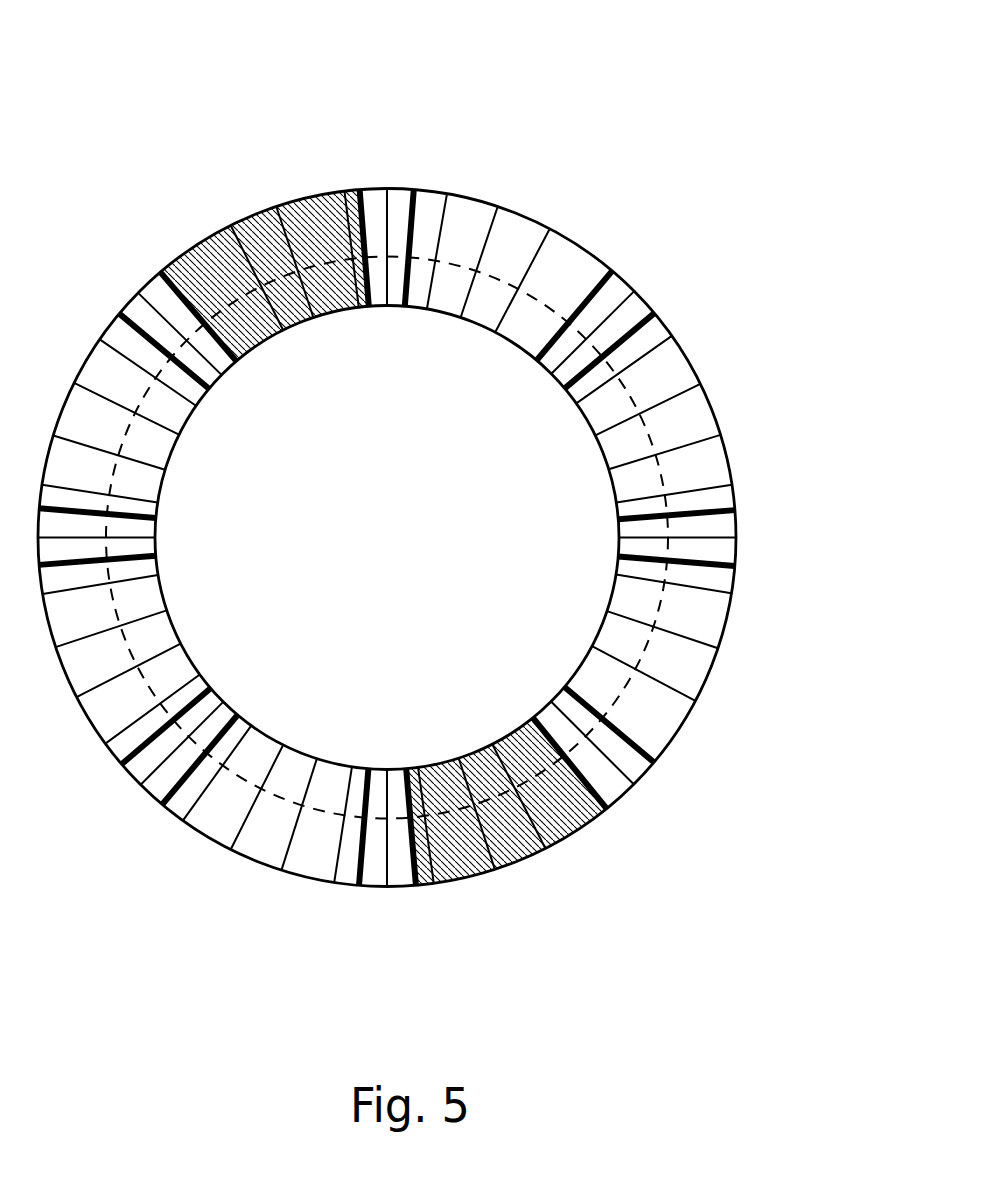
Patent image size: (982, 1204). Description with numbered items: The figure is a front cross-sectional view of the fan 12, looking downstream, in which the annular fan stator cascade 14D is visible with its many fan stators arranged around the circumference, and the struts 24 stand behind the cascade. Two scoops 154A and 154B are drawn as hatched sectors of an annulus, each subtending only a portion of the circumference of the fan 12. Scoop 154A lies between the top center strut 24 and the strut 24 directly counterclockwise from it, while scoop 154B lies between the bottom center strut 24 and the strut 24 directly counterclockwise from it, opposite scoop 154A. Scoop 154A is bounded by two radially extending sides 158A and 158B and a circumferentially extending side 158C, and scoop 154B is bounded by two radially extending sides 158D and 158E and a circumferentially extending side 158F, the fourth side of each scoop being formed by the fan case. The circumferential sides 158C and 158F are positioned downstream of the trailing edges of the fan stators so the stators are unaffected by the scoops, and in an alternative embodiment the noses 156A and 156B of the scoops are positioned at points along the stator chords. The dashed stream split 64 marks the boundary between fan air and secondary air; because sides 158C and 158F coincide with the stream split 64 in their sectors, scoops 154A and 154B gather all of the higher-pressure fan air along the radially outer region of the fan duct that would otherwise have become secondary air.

The fan 12 is at (721, 86).
The fan stator cascade 14D is at (498, 216).
The strut 24 is at (419, 222).
The stream split 64 is at (669, 514).
The scoop 154A is at (318, 258).
The scoop 154B is at (499, 806).
The nose 156A is at (226, 304).
The nose 156B is at (527, 808).
The radially extending side 158A is at (176, 285).
The radially extending side 158B is at (356, 208).
The circumferentially extending side 158C is at (275, 267).
The radially extending side 158D is at (424, 888).
The radially extending side 158E is at (600, 806).
The circumferentially extending side 158F is at (580, 840).